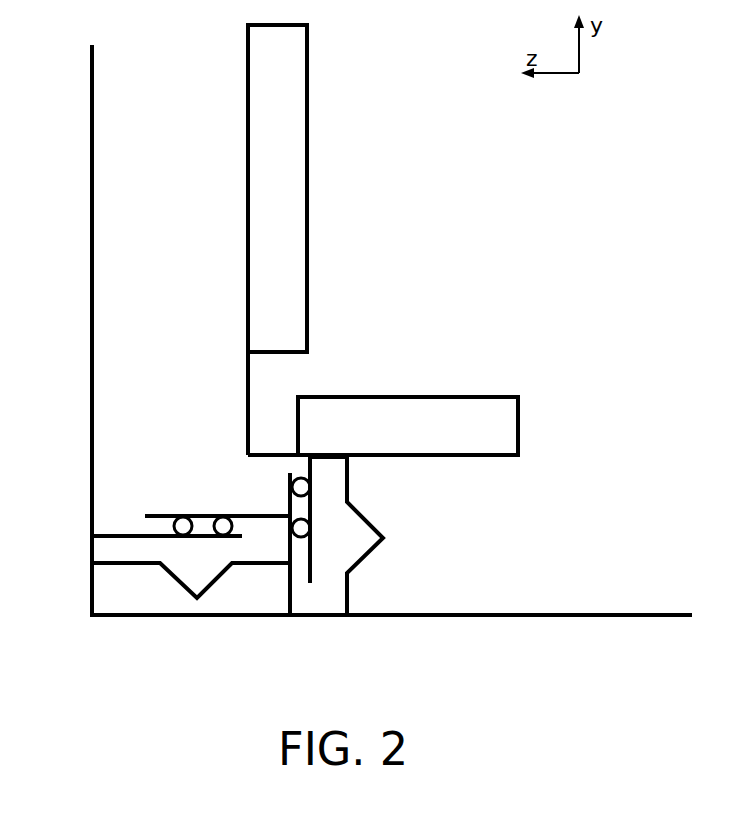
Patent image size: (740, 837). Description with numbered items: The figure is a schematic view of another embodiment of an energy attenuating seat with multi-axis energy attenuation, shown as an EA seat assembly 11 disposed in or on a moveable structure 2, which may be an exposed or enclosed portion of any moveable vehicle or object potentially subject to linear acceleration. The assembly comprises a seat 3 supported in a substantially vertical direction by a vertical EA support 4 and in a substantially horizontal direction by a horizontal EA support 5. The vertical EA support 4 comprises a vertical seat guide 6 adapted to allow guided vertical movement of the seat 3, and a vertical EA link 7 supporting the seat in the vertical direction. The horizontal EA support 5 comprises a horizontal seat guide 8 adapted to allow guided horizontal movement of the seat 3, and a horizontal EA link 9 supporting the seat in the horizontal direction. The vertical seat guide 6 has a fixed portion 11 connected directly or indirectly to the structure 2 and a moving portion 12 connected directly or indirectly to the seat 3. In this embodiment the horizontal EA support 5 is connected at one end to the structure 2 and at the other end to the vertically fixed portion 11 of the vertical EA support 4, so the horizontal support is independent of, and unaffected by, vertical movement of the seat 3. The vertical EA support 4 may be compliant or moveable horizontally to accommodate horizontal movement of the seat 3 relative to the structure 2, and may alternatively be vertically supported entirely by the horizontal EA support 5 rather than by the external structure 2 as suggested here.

The moveable structure 2 is at (528, 615).
The seat 3 is at (307, 185).
The vertical EA support 4 is at (493, 512).
The horizontal EA support 5 is at (155, 445).
The vertical seat guide 6 is at (283, 507).
The vertical EA link 7 is at (373, 553).
The horizontal seat guide 8 is at (142, 493).
The horizontal EA link 9 is at (180, 587).
The EA seat assembly 11 is at (488, 258).
The moving portion 12 is at (312, 462).